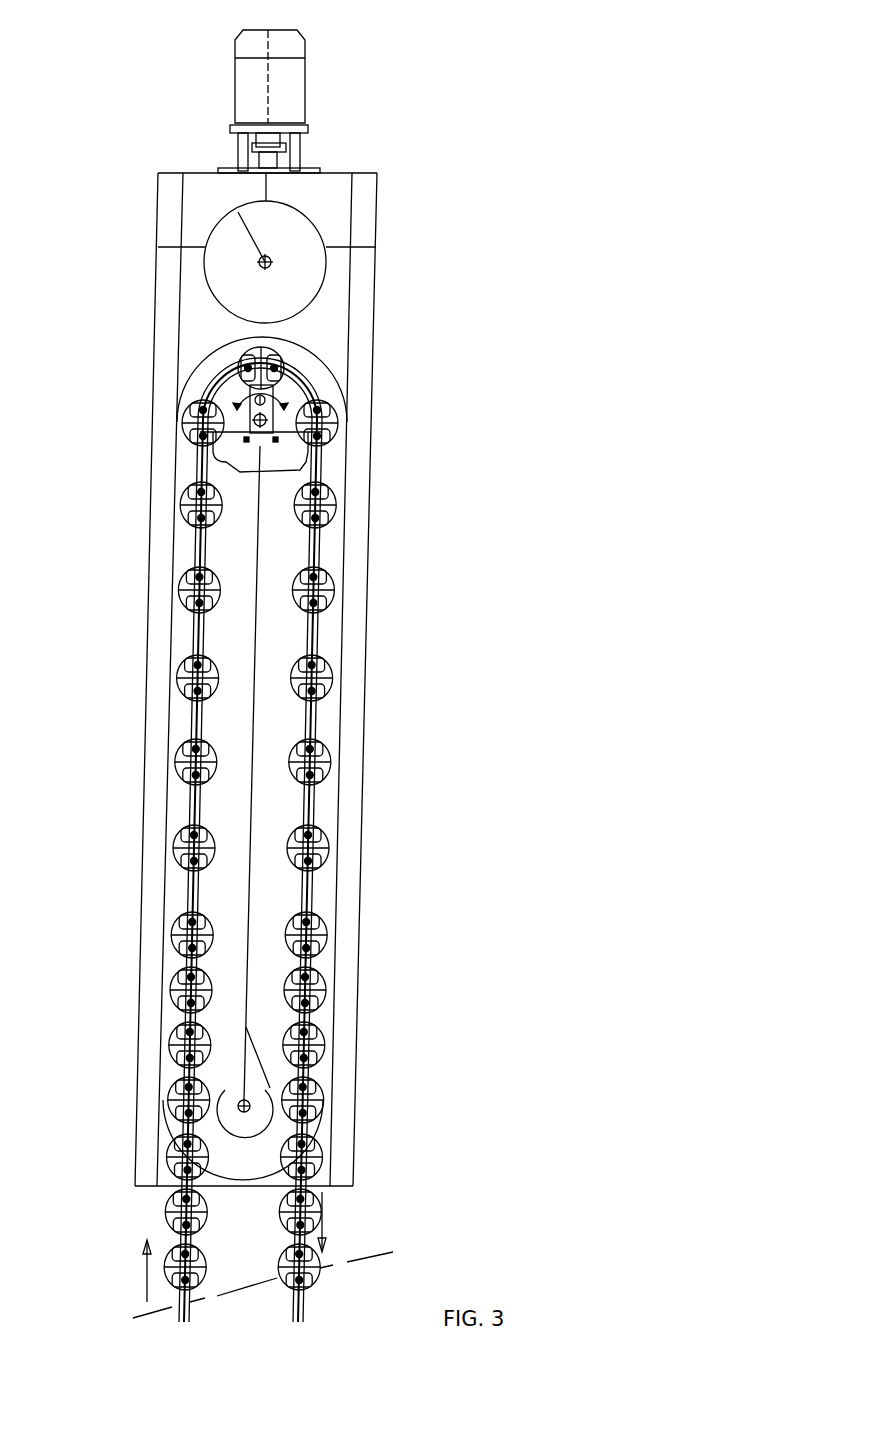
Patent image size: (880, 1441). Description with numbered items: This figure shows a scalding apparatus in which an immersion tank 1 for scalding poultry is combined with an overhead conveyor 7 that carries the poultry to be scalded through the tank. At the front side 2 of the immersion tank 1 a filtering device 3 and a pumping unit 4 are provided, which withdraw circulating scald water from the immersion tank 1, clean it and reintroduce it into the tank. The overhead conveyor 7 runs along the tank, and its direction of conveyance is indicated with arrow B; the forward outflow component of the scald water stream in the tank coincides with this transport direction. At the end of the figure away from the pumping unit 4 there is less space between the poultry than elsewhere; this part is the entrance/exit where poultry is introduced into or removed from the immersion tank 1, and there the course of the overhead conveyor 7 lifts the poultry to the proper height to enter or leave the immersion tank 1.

The immersion tank 1 is at (379, 727).
The front side 2 is at (402, 230).
The filtering device 3 is at (230, 276).
The pumping unit 4 is at (320, 100).
The overhead conveyor 7 is at (185, 805).